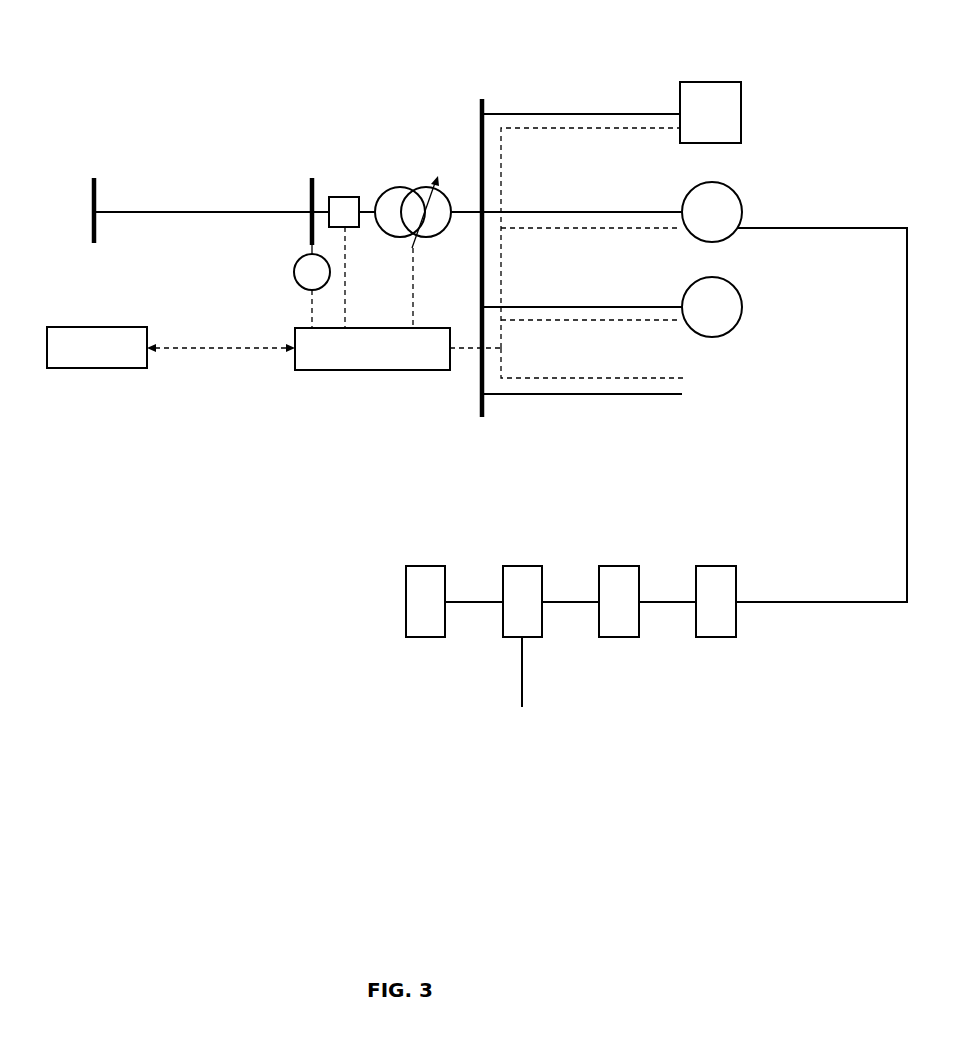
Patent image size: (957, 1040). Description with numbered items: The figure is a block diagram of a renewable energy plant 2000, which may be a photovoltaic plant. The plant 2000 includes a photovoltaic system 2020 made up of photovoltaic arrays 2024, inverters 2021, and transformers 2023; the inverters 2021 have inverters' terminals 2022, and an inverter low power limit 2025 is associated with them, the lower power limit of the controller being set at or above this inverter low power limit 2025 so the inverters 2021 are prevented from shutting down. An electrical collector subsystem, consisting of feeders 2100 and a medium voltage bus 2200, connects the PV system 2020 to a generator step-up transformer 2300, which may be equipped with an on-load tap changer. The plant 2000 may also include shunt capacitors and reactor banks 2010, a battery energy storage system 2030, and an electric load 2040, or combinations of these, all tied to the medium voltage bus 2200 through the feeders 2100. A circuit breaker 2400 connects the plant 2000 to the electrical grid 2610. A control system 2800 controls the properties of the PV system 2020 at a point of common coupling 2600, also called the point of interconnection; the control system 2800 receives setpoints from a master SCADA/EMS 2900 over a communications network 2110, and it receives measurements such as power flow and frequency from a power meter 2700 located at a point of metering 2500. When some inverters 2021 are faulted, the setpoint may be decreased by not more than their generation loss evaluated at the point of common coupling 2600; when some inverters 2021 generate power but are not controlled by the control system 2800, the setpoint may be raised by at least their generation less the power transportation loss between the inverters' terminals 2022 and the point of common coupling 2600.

The renewable energy plant 2000 is at (353, 44).
The shunt capacitors and reactor banks 2010 is at (743, 112).
The photovoltaic system 2020 is at (743, 215).
The inverters 2021 is at (523, 580).
The inverters' terminals 2022 is at (617, 625).
The transformers 2023 is at (727, 627).
The photovoltaic arrays 2024 is at (419, 617).
The inverter low power limit 2025 is at (516, 693).
The battery energy storage system 2030 is at (743, 305).
The electric load 2040 is at (739, 392).
The feeders 2100 is at (623, 116).
The communications network 2110 is at (262, 350).
The medium voltage bus 2200 is at (478, 107).
The generator step-up transformer 2300 is at (395, 185).
The circuit breaker 2400 is at (345, 195).
The point of metering 2500 is at (308, 207).
The point of common coupling 2600 is at (93, 208).
The electrical grid 2610 is at (106, 212).
The power meter 2700 is at (294, 272).
The control system 2800 is at (398, 349).
The master SCADA/EMS 2900 is at (97, 347).